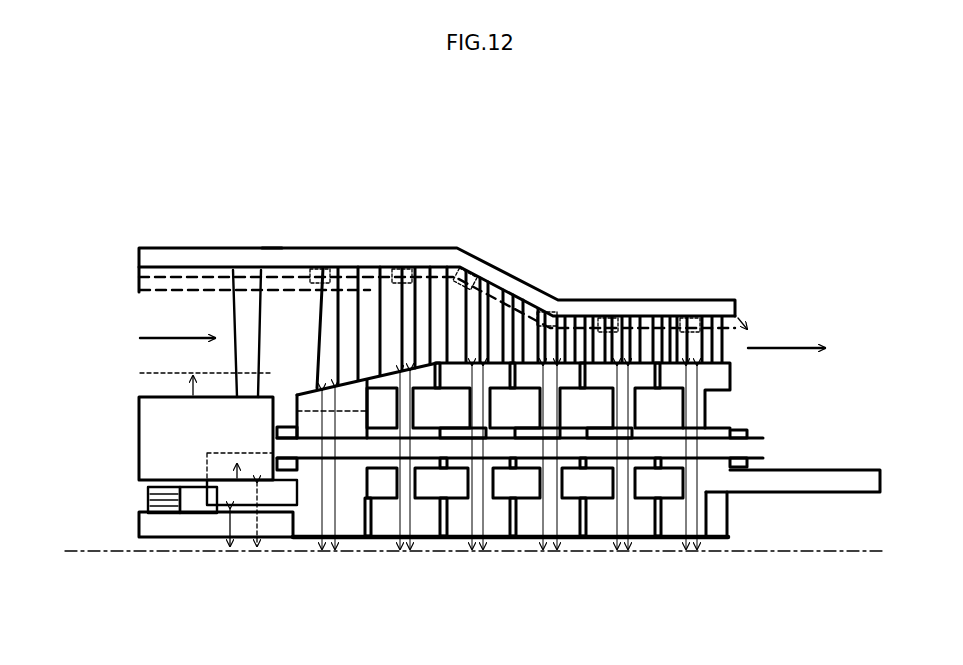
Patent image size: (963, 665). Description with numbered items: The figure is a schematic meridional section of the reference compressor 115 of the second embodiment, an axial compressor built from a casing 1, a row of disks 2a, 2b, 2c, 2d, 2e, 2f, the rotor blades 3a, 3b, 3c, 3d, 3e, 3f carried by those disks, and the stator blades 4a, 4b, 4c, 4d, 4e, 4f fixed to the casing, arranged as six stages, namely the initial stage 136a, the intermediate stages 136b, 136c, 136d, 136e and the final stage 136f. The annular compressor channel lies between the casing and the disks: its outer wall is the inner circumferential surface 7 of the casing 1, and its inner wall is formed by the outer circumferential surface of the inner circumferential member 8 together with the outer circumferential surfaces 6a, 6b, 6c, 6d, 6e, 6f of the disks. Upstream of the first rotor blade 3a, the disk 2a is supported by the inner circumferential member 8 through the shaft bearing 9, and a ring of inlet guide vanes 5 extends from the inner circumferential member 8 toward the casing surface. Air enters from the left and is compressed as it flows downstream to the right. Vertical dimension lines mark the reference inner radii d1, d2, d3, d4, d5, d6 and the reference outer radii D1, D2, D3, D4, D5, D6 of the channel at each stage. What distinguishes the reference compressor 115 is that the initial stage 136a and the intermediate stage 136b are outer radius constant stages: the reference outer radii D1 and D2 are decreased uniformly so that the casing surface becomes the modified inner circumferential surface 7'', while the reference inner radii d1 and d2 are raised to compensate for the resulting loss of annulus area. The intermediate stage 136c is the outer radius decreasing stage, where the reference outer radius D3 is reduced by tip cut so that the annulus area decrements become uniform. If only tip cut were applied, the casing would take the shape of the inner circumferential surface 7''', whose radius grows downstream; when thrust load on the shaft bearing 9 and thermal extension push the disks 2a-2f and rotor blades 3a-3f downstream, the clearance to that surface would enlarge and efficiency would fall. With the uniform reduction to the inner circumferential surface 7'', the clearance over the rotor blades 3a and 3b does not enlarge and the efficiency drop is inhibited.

The reference compressor 115 is at (214, 155).
The casing 1 is at (197, 247).
The inlet guide vanes 5 is at (225, 250).
The inner circumferential surface 7 is at (264, 214).
The inner circumferential surface 7'' is at (406, 297).
The inner circumferential surface 7''' is at (227, 325).
The inner circumferential member 8 is at (138, 468).
The shaft bearing 9 is at (148, 498).
The disk 2a is at (300, 525).
The disk 2b is at (385, 525).
The disk 2c is at (455, 525).
The disk 2d is at (525, 525).
The disk 2e is at (597, 525).
The disk 2f is at (665, 525).
The rotor blade 3a is at (318, 250).
The rotor blade 3b is at (400, 250).
The rotor blade 3c is at (478, 256).
The rotor blade 3d is at (577, 300).
The rotor blade 3e is at (620, 300).
The rotor blade 3f is at (698, 300).
The stator blade 4a is at (353, 250).
The stator blade 4b is at (430, 250).
The stator blade 4c is at (520, 262).
The stator blade 4d is at (606, 300).
The stator blade 4e is at (652, 296).
The stator blade 4f is at (725, 300).
The outer circumferential surface 6a is at (318, 268).
The outer circumferential surface 6b is at (390, 262).
The outer circumferential surface 6c is at (465, 262).
The outer circumferential surface 6d is at (548, 300).
The outer circumferential surface 6e is at (606, 300).
The outer circumferential surface 6f is at (690, 300).
The initial stage 136a is at (278, 162).
The intermediate stage 136b is at (407, 128).
The intermediate stage 136c is at (521, 151).
The intermediate stage 136d is at (597, 174).
The intermediate stage 136e is at (673, 187).
The final stage 136f is at (756, 178).
The reference inner radius d1 is at (312, 469).
The reference outer radius D1 is at (349, 467).
The reference inner radius d2 is at (390, 460).
The reference outer radius D2 is at (425, 459).
The reference inner radius d3 is at (460, 457).
The reference outer radius D3 is at (496, 457).
The reference inner radius d4 is at (530, 457).
The reference outer radius D4 is at (570, 457).
The reference inner radius d5 is at (603, 457).
The reference outer radius D5 is at (642, 457).
The reference inner radius d6 is at (675, 457).
The reference outer radius D6 is at (712, 457).